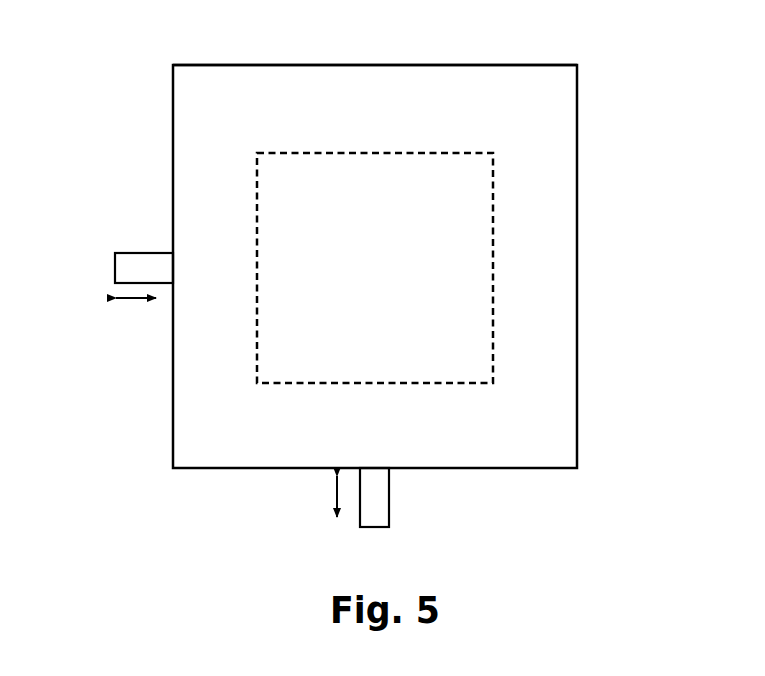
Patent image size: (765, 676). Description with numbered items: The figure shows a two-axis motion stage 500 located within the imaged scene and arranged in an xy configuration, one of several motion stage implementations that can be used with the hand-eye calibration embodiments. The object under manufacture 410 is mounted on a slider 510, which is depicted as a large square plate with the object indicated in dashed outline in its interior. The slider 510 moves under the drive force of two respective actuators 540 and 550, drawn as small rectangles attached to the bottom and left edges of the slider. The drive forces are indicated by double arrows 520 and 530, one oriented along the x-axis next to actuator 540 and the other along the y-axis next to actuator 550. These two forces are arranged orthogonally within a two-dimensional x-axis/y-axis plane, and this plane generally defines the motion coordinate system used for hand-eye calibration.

The two-axis motion stage 500 is at (590, 85).
The slider 510 is at (458, 82).
The object under manufacture 410 is at (493, 263).
The actuator 550 is at (160, 253).
The double arrow 530 is at (133, 301).
The actuator 540 is at (383, 510).
The double arrow 520 is at (332, 492).